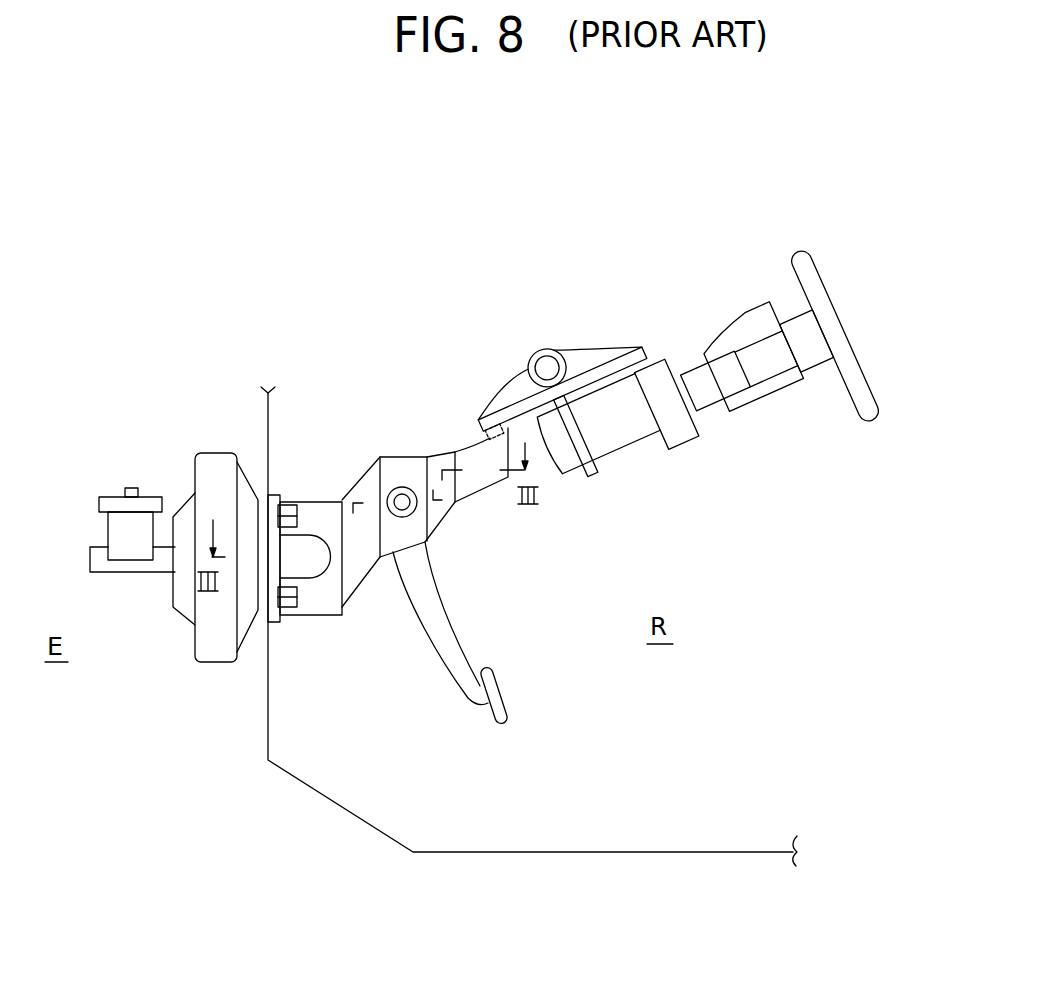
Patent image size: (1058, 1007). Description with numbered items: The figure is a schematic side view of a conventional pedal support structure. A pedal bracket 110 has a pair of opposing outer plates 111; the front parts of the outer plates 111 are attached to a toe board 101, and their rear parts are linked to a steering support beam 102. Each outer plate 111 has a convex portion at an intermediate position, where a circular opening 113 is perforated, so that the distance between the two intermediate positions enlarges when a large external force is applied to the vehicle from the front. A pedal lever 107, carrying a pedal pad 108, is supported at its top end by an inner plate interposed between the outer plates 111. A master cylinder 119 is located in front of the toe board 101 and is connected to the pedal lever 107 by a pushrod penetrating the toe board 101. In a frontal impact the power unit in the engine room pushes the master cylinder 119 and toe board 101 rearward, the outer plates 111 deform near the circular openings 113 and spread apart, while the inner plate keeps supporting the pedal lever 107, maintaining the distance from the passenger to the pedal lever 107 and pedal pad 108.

The toe board 101 is at (267, 727).
The steering support beam 102 is at (542, 348).
The pedal lever 107 is at (433, 607).
The pedal pad 108 is at (500, 702).
The pedal bracket 110 is at (370, 425).
The outer plates 111 is at (322, 630).
The circular opening 113 is at (402, 487).
The master cylinder 119 is at (193, 457).